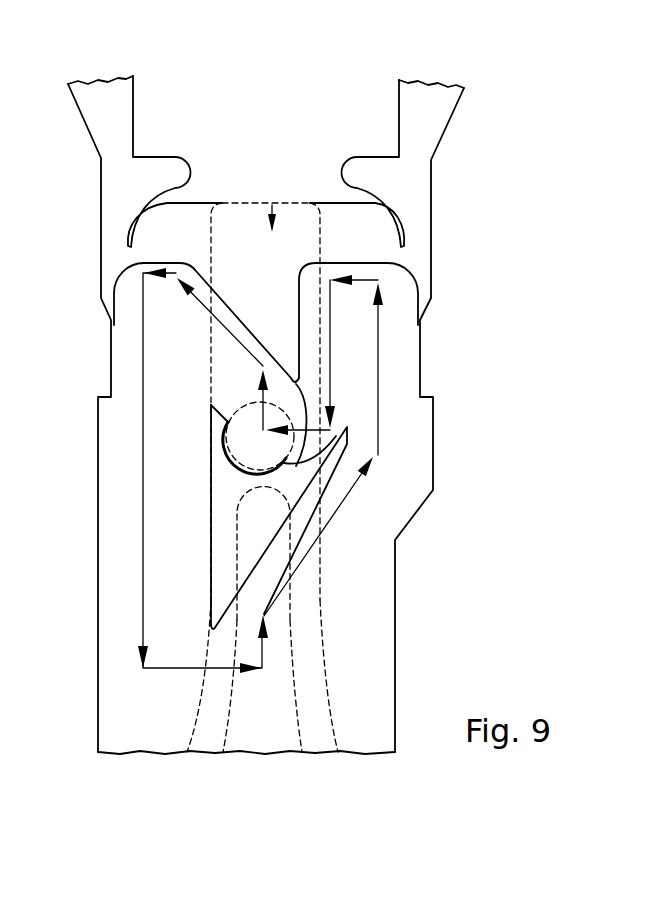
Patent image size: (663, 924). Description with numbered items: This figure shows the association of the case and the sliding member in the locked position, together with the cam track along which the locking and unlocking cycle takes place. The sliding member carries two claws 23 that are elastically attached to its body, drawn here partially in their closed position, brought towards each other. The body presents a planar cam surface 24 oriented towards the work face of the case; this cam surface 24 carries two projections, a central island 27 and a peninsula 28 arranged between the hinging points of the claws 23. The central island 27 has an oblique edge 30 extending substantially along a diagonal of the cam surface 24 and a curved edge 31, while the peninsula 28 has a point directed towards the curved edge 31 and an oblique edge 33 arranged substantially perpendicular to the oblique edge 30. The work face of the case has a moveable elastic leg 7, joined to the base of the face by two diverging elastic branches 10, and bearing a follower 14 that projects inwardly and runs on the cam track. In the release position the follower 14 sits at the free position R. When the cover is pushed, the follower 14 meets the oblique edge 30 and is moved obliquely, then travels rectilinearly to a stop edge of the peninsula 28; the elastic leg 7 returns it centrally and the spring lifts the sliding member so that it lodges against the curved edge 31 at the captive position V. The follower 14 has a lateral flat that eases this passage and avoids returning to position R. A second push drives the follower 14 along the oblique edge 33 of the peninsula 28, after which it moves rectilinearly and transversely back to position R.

The elastic leg 7 is at (273, 203).
The elastic branches 10 is at (207, 748).
The follower 14 is at (242, 438).
The claws 23 is at (125, 113).
The cam surface 24 is at (172, 573).
The central island 27 is at (236, 476).
The peninsula 28 is at (204, 210).
The oblique edge 30 is at (292, 518).
The curved edge 31 is at (308, 401).
The oblique edge 33 is at (245, 328).
The captive position V is at (245, 397).
The free position R is at (262, 670).